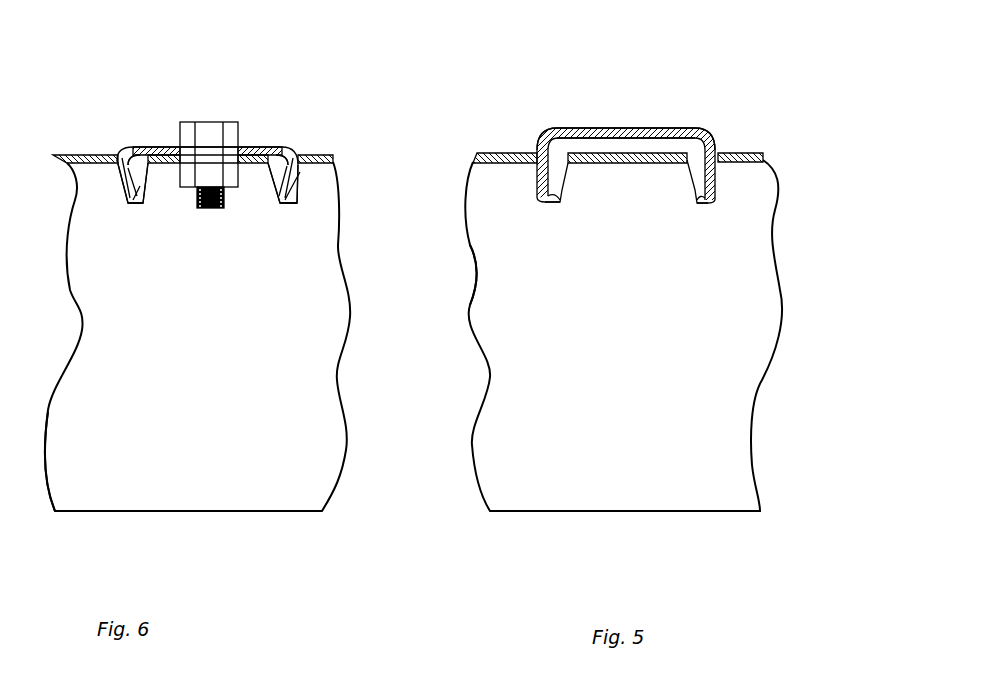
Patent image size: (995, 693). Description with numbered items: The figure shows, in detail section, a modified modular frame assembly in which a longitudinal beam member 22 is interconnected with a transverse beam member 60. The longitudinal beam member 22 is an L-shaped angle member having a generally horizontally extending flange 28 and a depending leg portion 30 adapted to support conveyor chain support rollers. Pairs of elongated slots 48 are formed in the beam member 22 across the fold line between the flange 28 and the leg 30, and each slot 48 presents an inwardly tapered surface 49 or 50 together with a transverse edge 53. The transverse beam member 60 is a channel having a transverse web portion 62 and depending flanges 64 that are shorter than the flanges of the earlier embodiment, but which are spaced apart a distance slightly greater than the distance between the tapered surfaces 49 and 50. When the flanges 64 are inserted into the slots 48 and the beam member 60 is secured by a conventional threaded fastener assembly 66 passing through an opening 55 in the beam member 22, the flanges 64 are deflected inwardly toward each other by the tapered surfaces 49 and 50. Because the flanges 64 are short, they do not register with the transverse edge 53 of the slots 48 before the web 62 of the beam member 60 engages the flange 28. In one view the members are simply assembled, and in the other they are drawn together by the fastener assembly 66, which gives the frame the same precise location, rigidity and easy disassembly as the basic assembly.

In FIG. 6, the longitudinal beam member 22 is at (315, 460).
In FIG. 5, the longitudinal beam member 22 is at (473, 440).
In FIG. 6, the flange 28 is at (83, 152).
In FIG. 5, the flange 28 is at (495, 152).
In FIG. 6, the depending leg portion 30 is at (48, 410).
In FIG. 5, the depending leg portion 30 is at (473, 272).
In FIG. 6, the slot 48 is at (147, 183).
In FIG. 5, the slot 48 is at (540, 135).
In FIG. 6, the inwardly tapered surface 49 is at (138, 186).
In FIG. 5, the inwardly tapered surface 49 is at (547, 183).
In FIG. 6, the inwardly tapered surface 50 is at (300, 172).
In FIG. 5, the inwardly tapered surface 50 is at (695, 197).
In FIG. 6, the transverse edge 53 is at (282, 200).
In FIG. 5, the transverse edge 53 is at (557, 198).
In FIG. 5, the opening 55 is at (638, 128).
In FIG. 6, the transverse beam member 60 is at (248, 147).
In FIG. 5, the transverse beam member 60 is at (677, 127).
In FIG. 6, the transverse web portion 62 is at (163, 147).
In FIG. 5, the transverse web portion 62 is at (595, 128).
In FIG. 6, the depending flange 64 is at (147, 147).
In FIG. 5, the depending flange 64 is at (537, 152).
In FIG. 6, the fastener assembly 66 is at (210, 122).